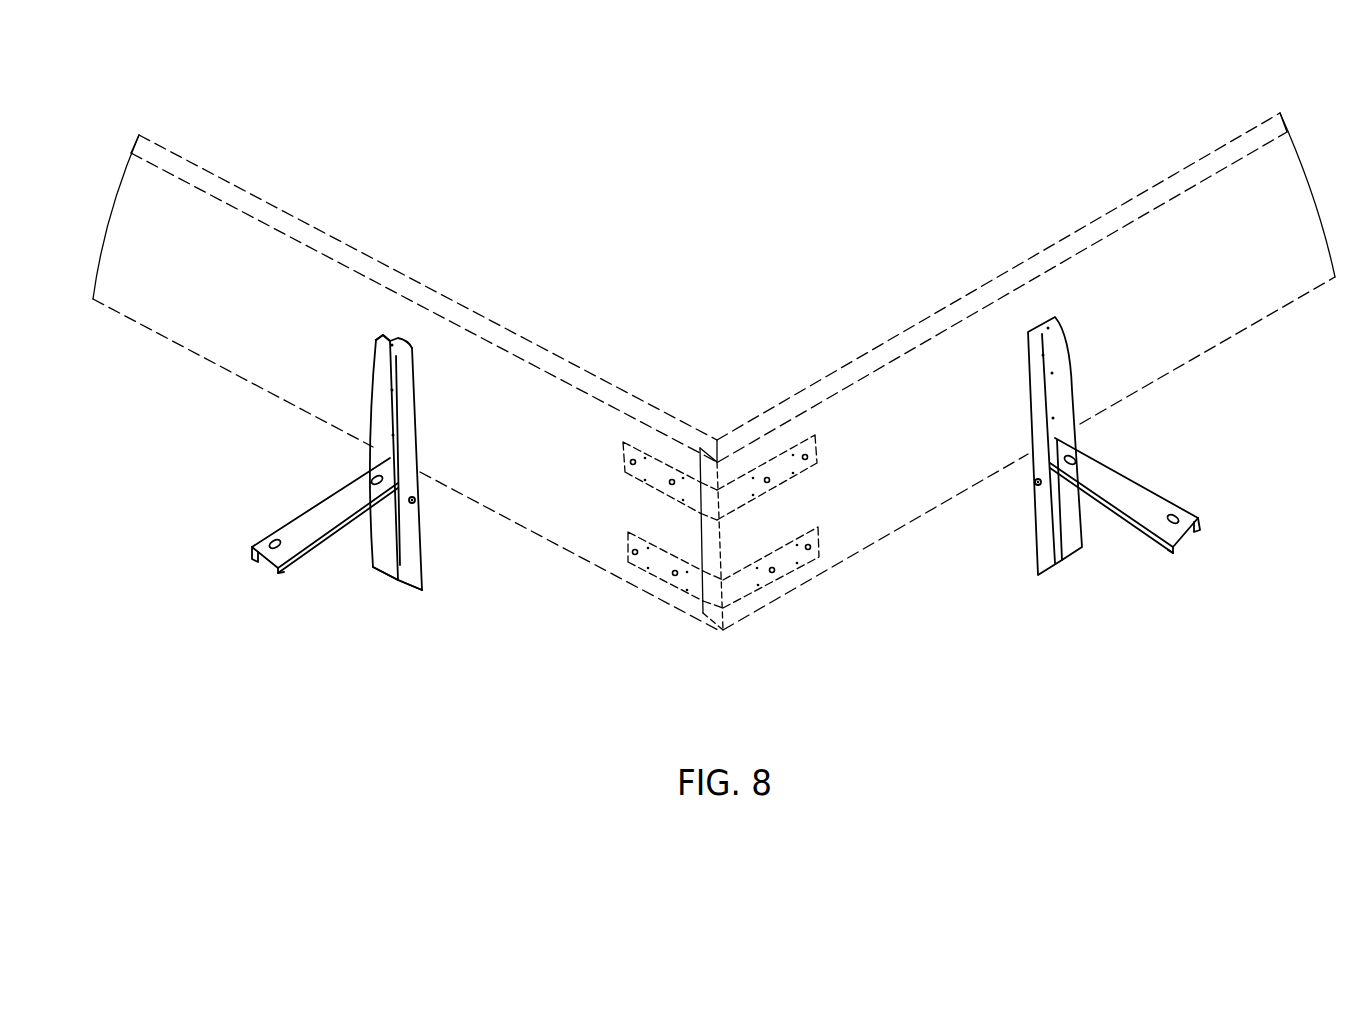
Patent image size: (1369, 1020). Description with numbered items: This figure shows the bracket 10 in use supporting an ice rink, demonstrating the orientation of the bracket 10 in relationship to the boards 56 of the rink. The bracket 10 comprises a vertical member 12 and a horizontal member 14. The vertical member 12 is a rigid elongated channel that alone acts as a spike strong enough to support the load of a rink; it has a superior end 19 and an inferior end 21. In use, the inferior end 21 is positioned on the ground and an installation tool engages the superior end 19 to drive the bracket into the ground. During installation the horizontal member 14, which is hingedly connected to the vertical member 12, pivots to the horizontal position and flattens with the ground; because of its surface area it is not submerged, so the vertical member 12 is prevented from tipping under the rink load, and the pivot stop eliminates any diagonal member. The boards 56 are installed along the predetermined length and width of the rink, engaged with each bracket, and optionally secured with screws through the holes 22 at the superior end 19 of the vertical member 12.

The bracket 10 is at (336, 445).
The vertical member 12 is at (435, 445).
The horizontal member 14 is at (350, 530).
The superior end 19 is at (386, 332).
The inferior end 21 is at (400, 585).
The hole 22 is at (395, 337).
The boards 56 is at (592, 417).